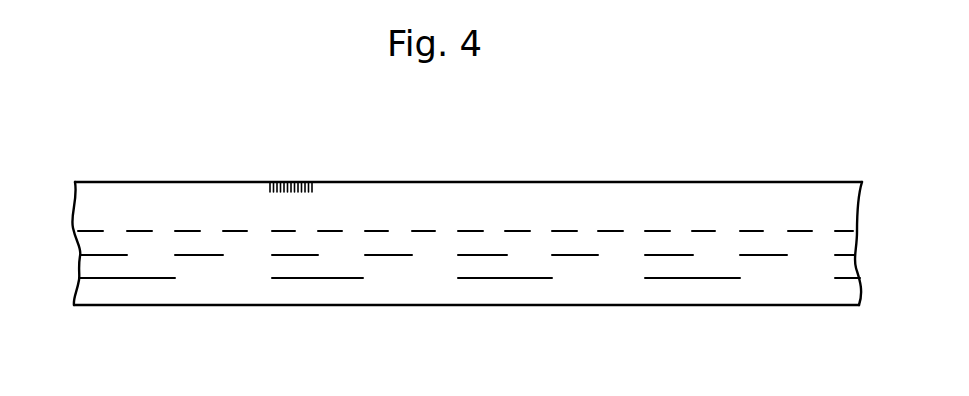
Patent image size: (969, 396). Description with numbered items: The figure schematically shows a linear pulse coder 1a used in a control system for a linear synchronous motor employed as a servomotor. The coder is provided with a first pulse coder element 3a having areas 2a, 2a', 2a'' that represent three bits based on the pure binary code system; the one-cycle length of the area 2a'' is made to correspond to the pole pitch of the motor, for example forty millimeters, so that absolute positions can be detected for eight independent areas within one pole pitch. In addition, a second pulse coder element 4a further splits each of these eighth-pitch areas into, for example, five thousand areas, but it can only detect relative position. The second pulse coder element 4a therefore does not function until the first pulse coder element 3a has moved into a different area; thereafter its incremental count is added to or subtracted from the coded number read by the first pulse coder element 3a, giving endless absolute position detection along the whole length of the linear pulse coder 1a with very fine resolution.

The linear pulse coder 1a is at (508, 188).
The second pulse coder element 4a is at (288, 182).
The area 2a is at (465, 303).
The area 2a' is at (467, 311).
The area 2a'' is at (469, 320).
The first pulse coder element 3a is at (226, 284).